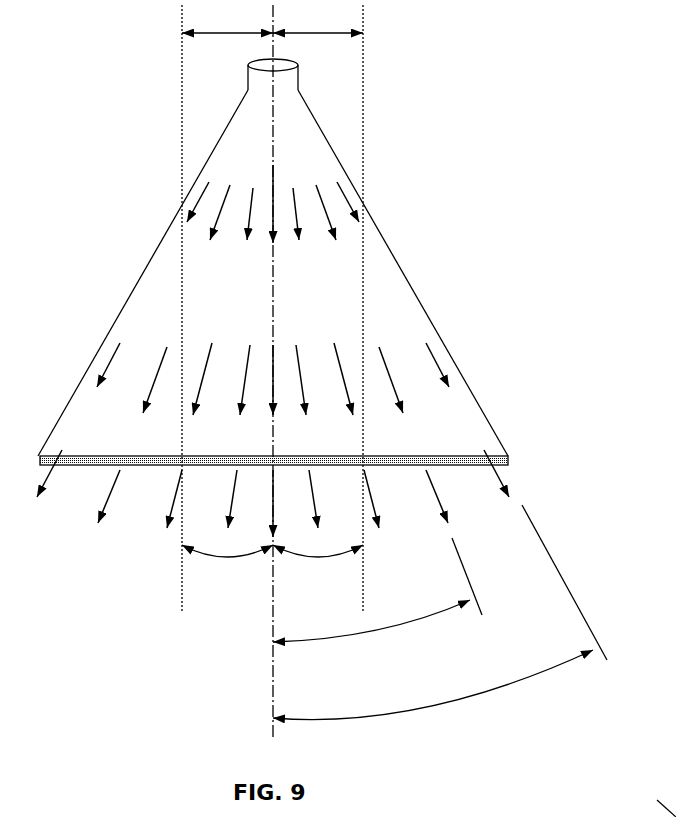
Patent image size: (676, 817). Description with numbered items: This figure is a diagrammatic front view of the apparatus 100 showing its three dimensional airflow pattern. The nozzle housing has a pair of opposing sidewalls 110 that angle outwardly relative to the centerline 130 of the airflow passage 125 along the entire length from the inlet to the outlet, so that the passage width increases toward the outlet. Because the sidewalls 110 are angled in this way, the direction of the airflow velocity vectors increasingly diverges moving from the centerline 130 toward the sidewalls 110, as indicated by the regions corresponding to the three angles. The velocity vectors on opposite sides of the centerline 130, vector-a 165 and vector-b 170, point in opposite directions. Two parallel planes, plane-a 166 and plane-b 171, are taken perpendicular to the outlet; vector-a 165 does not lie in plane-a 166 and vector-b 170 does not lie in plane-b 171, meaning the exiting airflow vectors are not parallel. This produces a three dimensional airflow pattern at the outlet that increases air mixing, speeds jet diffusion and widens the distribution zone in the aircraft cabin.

The apparatus 100 is at (448, 110).
The opposing sidewalls 110 is at (167, 233).
The airflow passage 125 is at (203, 310).
The centerline 130 is at (273, 128).
The vector-a 165 is at (157, 510).
The plane-a 166 is at (182, 45).
The vector-b 170 is at (397, 510).
The plane-b 171 is at (365, 45).